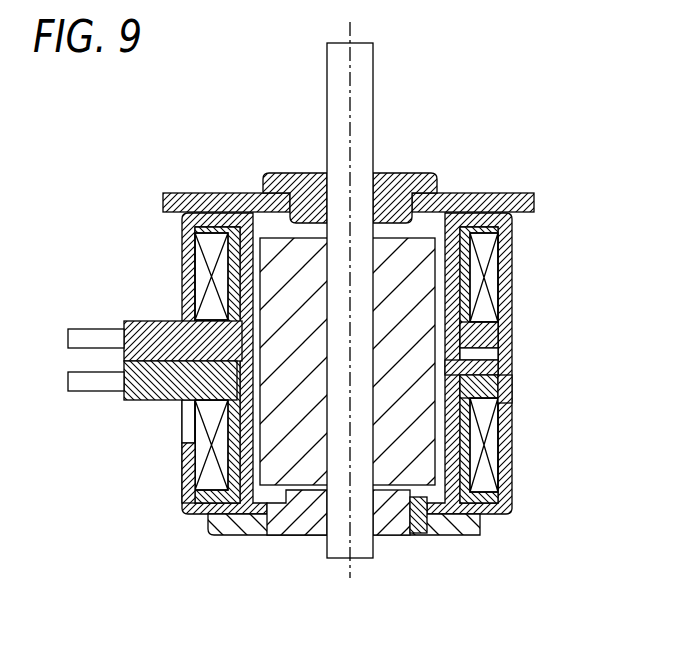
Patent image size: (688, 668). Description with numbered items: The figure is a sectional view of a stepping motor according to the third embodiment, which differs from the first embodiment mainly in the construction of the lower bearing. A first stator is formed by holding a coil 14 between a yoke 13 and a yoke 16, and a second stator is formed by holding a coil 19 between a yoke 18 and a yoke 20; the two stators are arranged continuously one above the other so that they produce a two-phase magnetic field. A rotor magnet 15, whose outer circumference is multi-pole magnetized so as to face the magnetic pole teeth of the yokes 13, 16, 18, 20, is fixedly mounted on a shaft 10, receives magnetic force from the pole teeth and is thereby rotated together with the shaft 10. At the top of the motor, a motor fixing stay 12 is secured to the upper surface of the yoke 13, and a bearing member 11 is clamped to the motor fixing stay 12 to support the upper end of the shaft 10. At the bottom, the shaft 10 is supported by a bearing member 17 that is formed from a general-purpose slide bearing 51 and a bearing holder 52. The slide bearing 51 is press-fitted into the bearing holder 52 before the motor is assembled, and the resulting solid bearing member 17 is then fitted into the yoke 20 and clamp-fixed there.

The shaft 10 is at (366, 73).
The bearing member 11 is at (419, 178).
The motor fixing stay 12 is at (512, 192).
The yoke 13 is at (188, 238).
The coil 14 is at (202, 286).
The rotor magnet 15 is at (425, 549).
The yoke 16 is at (472, 292).
The bearing member 17 is at (344, 571).
The yoke 18 is at (228, 417).
The coil 19 is at (488, 446).
The yoke 20 is at (507, 398).
The slide bearing 51 is at (392, 537).
The bearing holder 52 is at (245, 537).